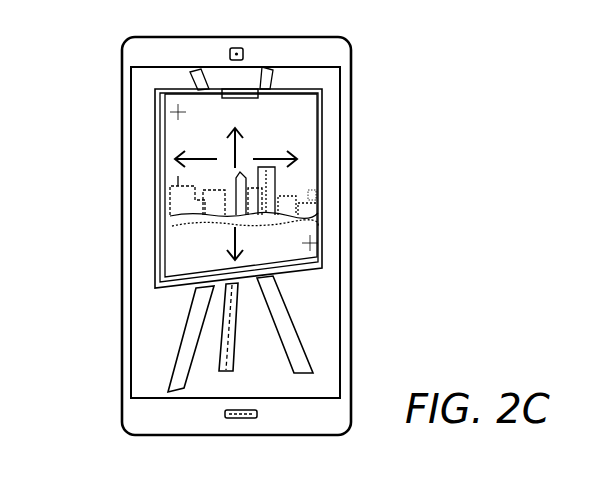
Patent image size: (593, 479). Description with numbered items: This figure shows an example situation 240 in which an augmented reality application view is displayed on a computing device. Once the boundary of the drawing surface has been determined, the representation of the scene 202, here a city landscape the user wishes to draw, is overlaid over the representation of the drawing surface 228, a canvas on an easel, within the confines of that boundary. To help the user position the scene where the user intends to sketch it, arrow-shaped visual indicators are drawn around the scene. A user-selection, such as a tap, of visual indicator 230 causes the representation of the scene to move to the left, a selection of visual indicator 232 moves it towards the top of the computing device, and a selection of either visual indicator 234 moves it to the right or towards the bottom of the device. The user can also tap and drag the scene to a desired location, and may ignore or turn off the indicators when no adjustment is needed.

The representation of the scene 202 is at (190, 131).
The representation of the drawing surface 228 is at (160, 250).
The visual indicator 230 is at (175, 160).
The visual indicator 232 is at (238, 137).
The visual indicator 234 is at (298, 160).
The example situation 240 is at (397, 100).